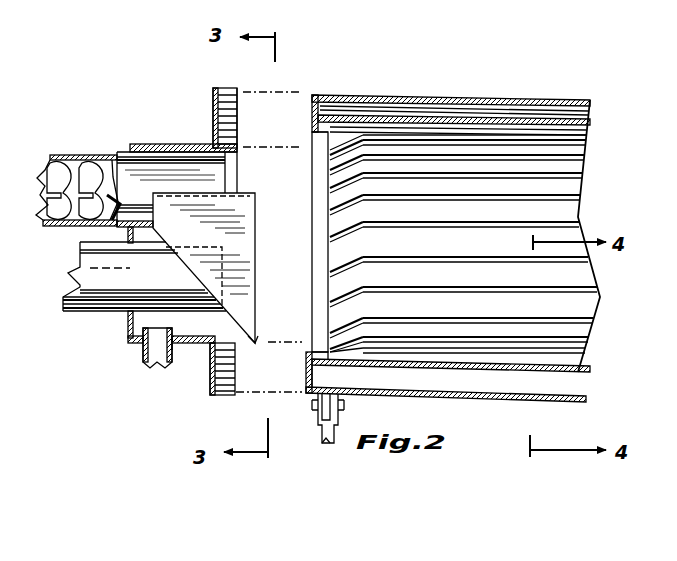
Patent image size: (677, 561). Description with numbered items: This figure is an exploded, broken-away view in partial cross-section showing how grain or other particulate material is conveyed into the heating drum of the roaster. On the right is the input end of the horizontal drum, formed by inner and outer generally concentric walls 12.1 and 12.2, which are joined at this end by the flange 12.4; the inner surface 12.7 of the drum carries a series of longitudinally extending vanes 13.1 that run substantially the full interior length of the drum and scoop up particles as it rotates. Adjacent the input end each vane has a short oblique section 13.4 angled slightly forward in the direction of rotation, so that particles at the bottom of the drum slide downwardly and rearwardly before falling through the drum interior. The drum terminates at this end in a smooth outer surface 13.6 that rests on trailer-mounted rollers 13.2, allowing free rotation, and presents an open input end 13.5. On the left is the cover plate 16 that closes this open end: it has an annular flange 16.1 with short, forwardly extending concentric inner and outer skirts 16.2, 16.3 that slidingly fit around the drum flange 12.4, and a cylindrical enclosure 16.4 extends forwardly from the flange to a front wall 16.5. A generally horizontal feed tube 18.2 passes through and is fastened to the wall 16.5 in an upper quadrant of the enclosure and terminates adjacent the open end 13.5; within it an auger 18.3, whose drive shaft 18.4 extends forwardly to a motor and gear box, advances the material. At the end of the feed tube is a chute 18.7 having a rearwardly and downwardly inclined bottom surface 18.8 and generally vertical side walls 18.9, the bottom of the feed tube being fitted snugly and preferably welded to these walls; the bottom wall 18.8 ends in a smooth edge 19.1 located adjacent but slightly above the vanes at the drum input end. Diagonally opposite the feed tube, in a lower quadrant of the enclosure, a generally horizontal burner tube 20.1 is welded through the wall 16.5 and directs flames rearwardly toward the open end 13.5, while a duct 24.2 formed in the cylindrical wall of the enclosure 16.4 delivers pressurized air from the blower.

The inner wall 12.1 is at (452, 116).
The outer wall 12.2 is at (401, 96).
The flange 12.4 is at (340, 97).
The inner surface of the drum 12.7 is at (508, 130).
The vanes 13.1 is at (578, 178).
The trailer-mounted rollers 13.2 is at (338, 407).
The oblique section 13.4 is at (355, 246).
The open input end 13.5 is at (320, 167).
The smooth outer surface 13.6 is at (316, 391).
The cover plate 16 is at (180, 130).
The annular flange 16.1 is at (217, 97).
The inner skirt 16.2 is at (228, 350).
The outer skirt 16.3 is at (223, 395).
The cylindrical enclosure 16.4 is at (145, 145).
The wall 16.5 is at (128, 330).
The feed tube 18.2 is at (60, 156).
The auger 18.3 is at (88, 176).
The drive shaft 18.4 is at (70, 212).
The chute 18.7 is at (255, 224).
The bottom surface 18.8 is at (188, 266).
The side walls 18.9 is at (250, 263).
The smooth edge 19.1 is at (256, 343).
The burner tube 20.1 is at (70, 273).
The duct 24.2 is at (148, 355).